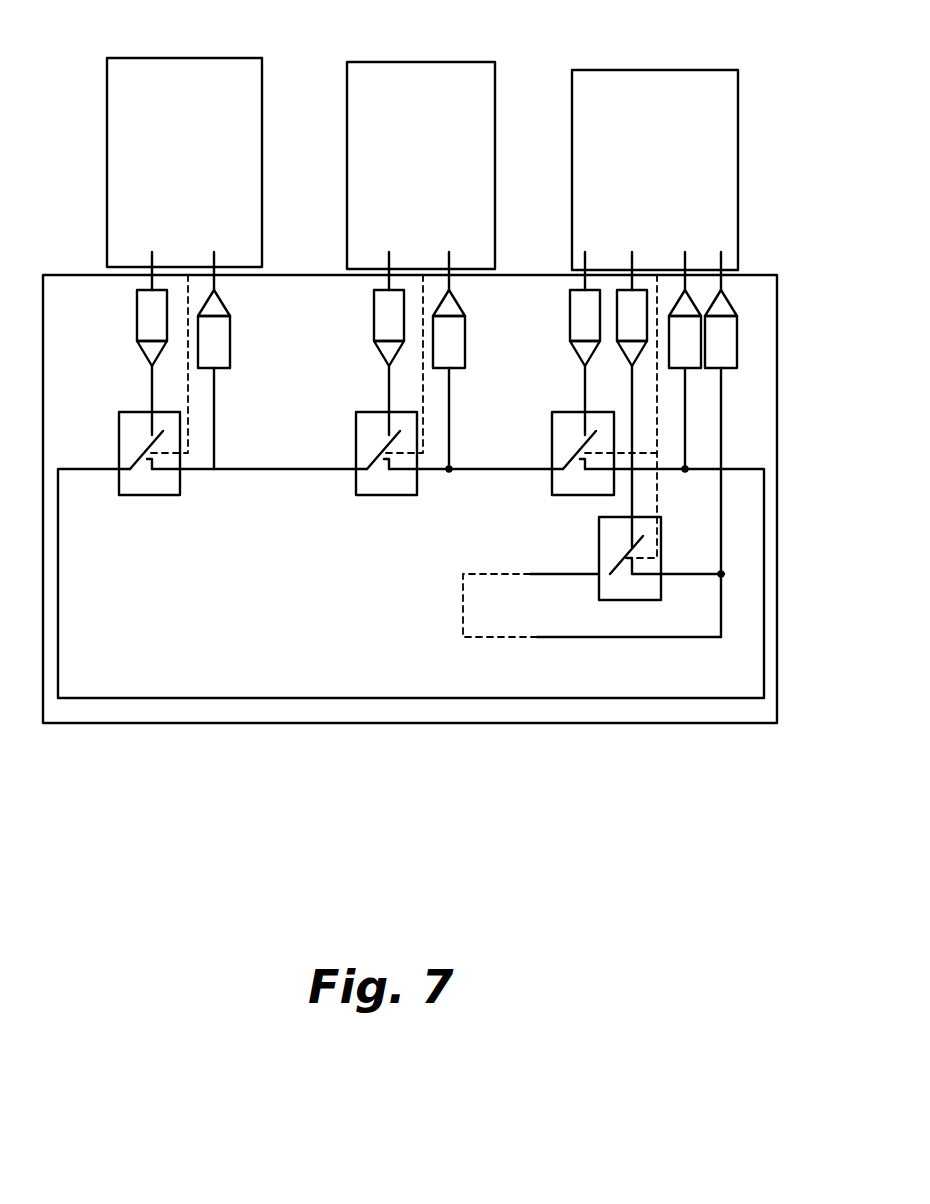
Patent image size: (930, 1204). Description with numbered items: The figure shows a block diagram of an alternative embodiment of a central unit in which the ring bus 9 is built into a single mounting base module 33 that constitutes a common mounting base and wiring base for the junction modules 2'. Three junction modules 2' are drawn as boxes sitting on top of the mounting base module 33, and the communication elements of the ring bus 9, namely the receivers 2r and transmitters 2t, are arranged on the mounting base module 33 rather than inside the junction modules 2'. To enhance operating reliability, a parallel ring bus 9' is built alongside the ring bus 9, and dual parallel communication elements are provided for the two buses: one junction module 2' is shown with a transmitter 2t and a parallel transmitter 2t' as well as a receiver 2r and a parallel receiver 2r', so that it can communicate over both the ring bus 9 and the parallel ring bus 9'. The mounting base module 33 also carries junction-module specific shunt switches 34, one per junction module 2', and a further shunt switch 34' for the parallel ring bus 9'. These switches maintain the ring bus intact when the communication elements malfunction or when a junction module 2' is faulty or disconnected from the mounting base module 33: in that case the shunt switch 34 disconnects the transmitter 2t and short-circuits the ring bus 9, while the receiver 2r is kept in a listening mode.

The junction module 2' is at (450, 147).
The transmitter 2t is at (334, 343).
The parallel transmitter 2t' is at (572, 399).
The receiver 2r is at (506, 326).
The parallel receiver 2r' is at (764, 425).
The shunt switch 34 is at (388, 421).
The parallel shunt switch 34' is at (621, 572).
The ring bus 9 is at (411, 639).
The parallel ring bus 9' is at (592, 634).
The mounting base module 33 is at (450, 712).